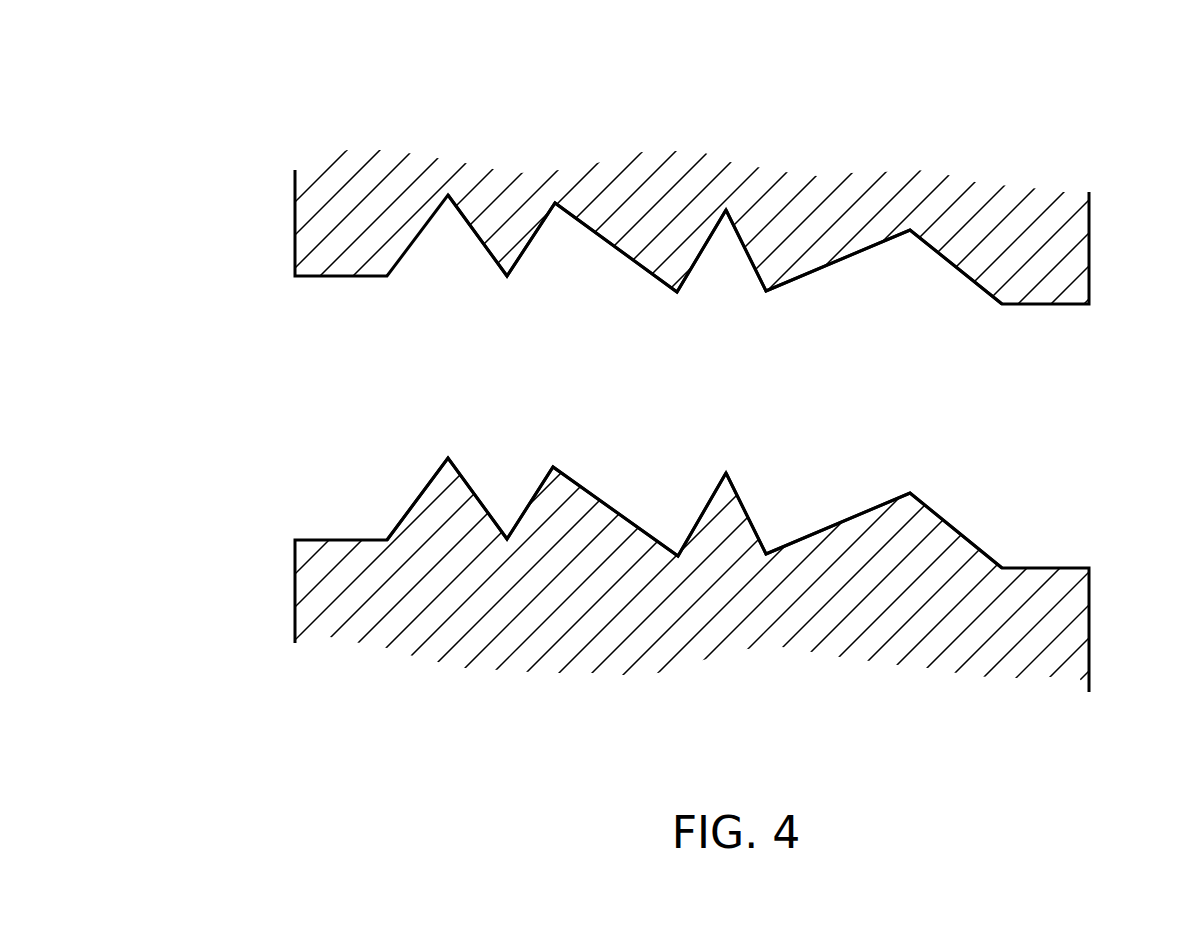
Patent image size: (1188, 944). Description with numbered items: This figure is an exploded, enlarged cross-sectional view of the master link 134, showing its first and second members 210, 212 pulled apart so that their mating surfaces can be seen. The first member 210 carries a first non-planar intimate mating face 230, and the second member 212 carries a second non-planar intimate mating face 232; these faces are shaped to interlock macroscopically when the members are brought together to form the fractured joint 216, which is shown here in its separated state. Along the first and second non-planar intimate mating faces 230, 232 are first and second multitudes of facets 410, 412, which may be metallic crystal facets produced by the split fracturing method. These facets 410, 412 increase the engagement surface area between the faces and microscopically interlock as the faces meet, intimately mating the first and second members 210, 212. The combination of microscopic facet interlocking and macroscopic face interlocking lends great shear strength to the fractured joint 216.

The master link 134 is at (270, 98).
The second member 212 is at (998, 213).
The first member 210 is at (935, 637).
The second non-planar intimate mating face 232 is at (631, 275).
The first non-planar intimate mating face 230 is at (644, 497).
The first multitude of facets 410 is at (977, 293).
The second multitude of facets 412 is at (945, 517).
The fractured joint 216 is at (1040, 413).